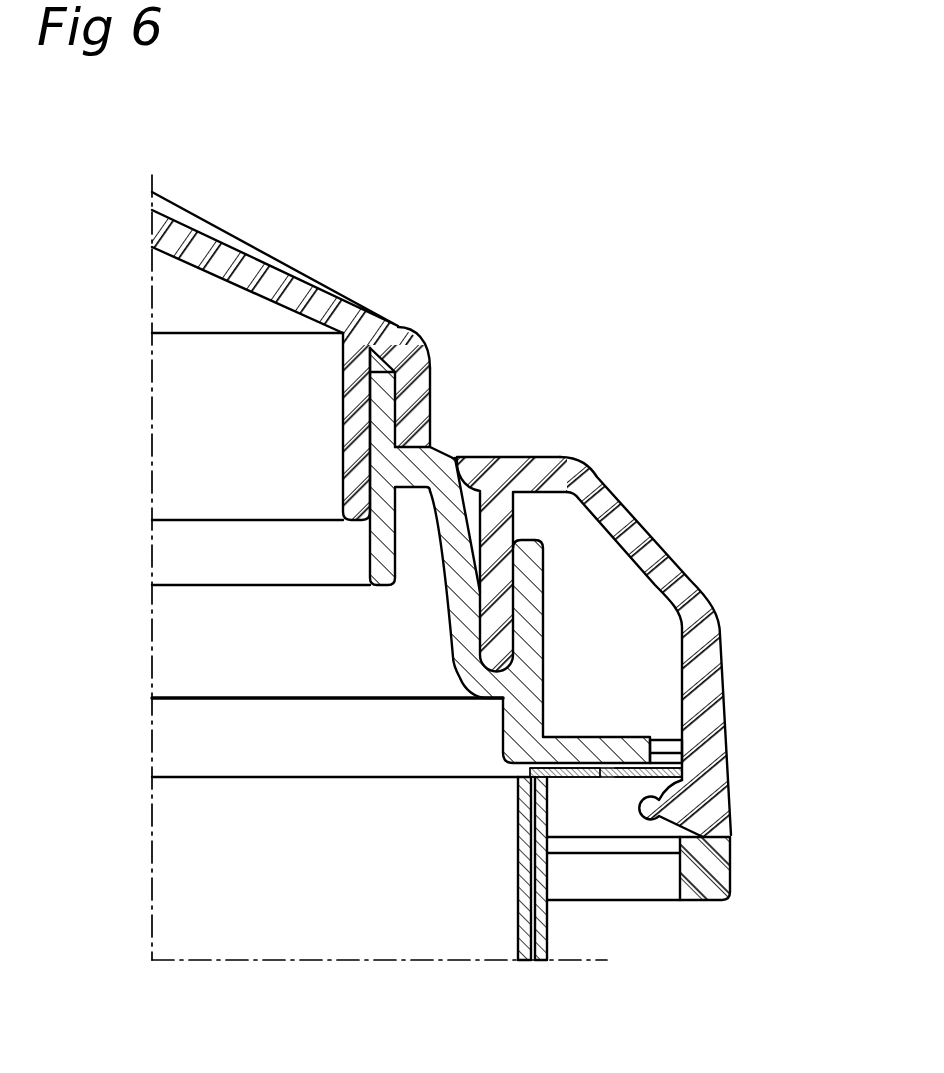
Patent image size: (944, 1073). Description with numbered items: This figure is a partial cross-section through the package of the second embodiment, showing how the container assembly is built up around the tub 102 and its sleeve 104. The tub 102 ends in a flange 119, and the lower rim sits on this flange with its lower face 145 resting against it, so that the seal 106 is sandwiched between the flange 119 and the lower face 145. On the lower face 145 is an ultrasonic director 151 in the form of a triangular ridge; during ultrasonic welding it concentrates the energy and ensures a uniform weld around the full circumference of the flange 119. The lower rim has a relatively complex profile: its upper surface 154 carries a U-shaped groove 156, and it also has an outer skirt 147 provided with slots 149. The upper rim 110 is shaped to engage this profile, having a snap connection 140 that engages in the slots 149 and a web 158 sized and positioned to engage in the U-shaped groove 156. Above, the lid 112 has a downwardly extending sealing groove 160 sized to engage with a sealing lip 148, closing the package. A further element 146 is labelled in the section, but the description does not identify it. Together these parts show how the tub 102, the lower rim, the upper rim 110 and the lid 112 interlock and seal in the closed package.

The tub 102 is at (520, 962).
The sleeve 104 is at (548, 920).
The seal 106 is at (243, 699).
The upper rim 110 is at (667, 545).
The lid 112 is at (288, 266).
The flange 119 is at (636, 773).
The snap connection 140 is at (648, 808).
The lower face 145 is at (577, 778).
The inner ring 146 is at (374, 430).
The outer skirt 147 is at (732, 847).
The sealing lip 148 is at (372, 363).
The slots 149 is at (655, 753).
The ultrasonic director 151 is at (600, 771).
The upper surface 154 is at (455, 458).
The U-shaped groove 156 is at (545, 541).
The web 158 is at (513, 523).
The sealing groove 160 is at (386, 360).